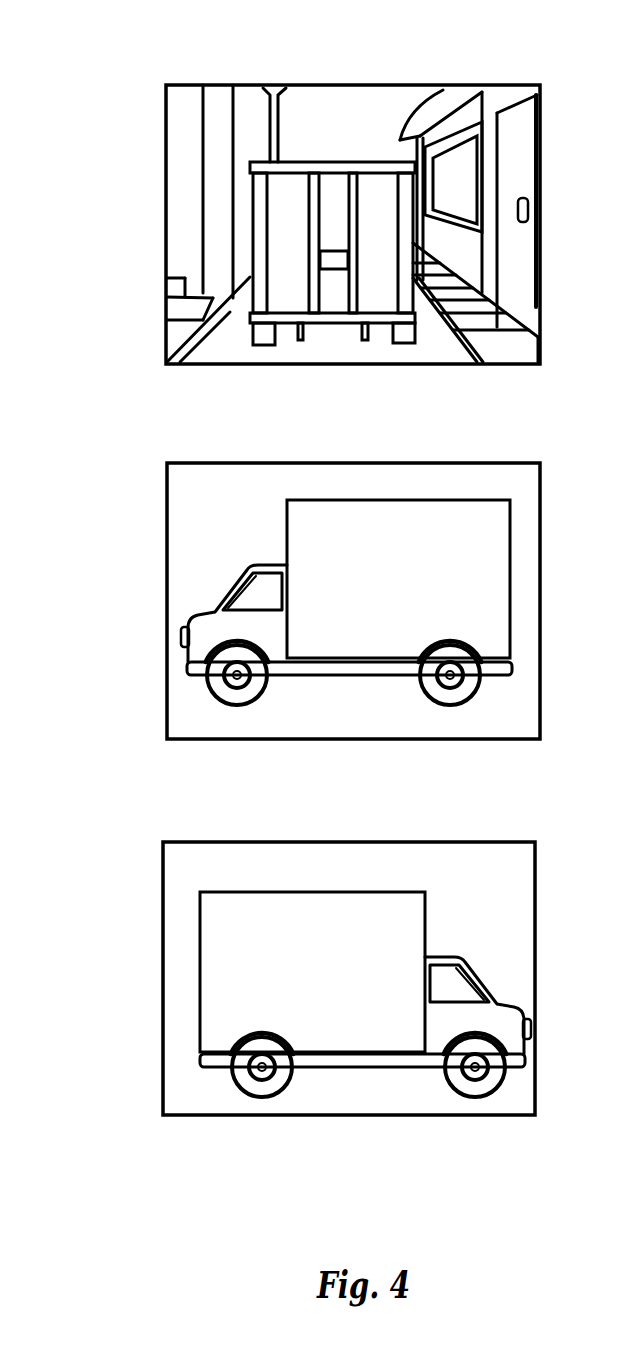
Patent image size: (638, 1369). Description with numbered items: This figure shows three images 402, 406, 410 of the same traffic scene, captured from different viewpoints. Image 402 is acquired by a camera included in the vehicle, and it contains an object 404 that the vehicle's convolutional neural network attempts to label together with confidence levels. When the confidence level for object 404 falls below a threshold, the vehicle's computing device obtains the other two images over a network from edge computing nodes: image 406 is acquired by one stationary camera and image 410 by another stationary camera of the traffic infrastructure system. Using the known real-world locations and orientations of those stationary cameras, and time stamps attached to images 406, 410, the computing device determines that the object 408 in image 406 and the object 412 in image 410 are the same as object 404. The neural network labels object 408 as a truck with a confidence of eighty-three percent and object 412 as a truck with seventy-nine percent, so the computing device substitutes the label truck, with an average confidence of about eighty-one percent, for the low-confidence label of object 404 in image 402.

The image 402 is at (166, 146).
The object 404 is at (335, 163).
The image 406 is at (165, 535).
The object 408 is at (375, 500).
The image 410 is at (160, 900).
The object 412 is at (342, 888).